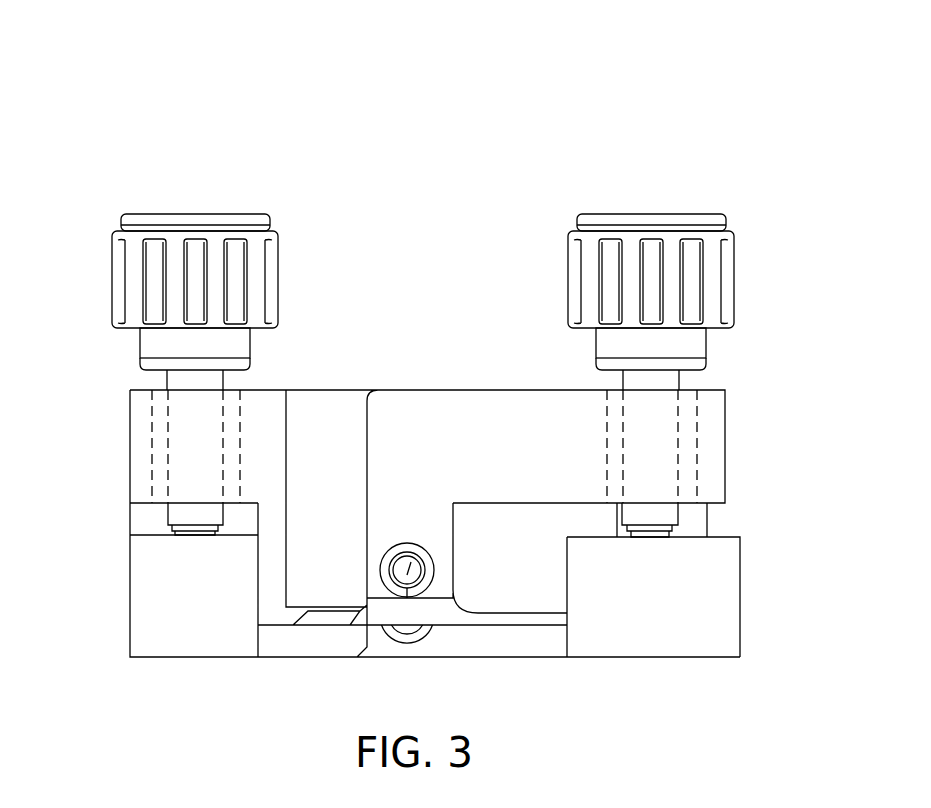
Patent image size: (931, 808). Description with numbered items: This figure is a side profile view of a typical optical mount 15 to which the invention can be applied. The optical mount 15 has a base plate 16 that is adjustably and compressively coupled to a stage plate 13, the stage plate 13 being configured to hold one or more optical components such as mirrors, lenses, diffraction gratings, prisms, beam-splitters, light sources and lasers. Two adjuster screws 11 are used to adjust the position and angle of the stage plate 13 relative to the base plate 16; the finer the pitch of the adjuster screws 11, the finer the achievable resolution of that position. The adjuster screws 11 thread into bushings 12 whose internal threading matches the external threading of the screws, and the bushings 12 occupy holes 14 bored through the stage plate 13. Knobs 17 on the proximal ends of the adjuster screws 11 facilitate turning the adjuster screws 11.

The adjuster screws 11 is at (183, 418).
The bushings 12 is at (158, 473).
The stage plate 13 is at (725, 480).
The holes 14 is at (223, 390).
The optical mount 15 is at (507, 103).
The base plate 16 is at (740, 590).
The knobs 17 is at (228, 240).